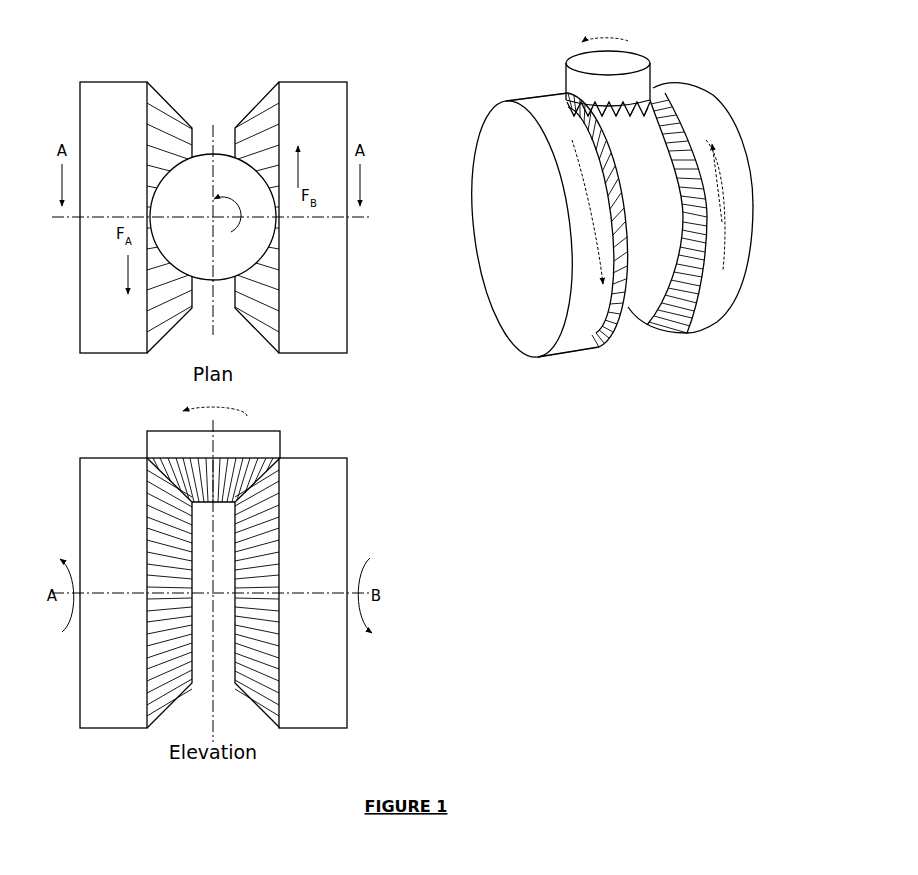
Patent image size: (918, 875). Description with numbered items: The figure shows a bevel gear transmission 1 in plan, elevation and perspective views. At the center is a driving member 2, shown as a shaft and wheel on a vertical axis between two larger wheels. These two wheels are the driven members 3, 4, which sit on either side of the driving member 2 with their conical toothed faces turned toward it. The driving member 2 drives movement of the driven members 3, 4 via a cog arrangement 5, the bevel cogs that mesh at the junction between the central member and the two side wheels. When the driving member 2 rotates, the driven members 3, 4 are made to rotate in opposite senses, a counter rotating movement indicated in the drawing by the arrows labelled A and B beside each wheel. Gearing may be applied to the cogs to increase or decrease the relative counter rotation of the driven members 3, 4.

The bevel gear transmission 1 is at (610, 372).
The driving member 2 is at (198, 165).
The driven member 3 is at (137, 95).
The driven member 4 is at (287, 100).
The cog arrangement 5 is at (258, 473).